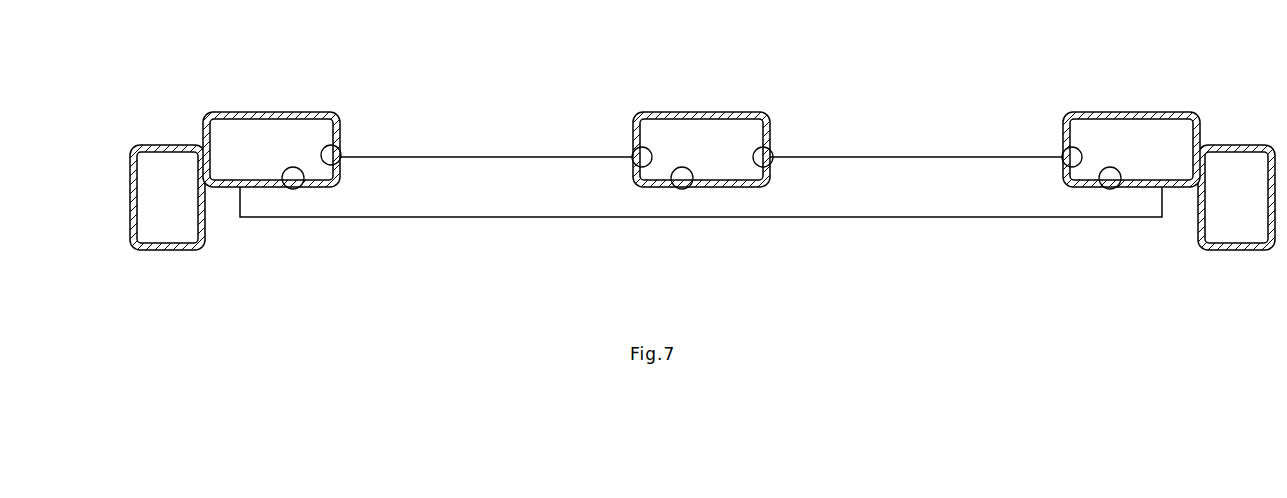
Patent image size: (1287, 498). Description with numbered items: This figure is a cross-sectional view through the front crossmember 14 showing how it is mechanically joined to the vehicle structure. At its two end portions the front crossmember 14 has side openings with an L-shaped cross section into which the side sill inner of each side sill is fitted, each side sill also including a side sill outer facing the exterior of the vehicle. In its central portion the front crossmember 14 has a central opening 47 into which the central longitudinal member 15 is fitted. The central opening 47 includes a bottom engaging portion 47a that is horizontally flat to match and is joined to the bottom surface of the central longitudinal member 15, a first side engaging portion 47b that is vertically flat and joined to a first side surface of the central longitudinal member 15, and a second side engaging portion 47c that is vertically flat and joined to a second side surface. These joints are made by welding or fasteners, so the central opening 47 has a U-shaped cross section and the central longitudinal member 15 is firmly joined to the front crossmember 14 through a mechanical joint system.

The front crossmember 14 is at (855, 208).
The central longitudinal member 15 is at (700, 112).
The central opening 47 is at (703, 160).
The bottom engaging portion 47a is at (690, 188).
The first side engaging portion 47b is at (637, 151).
The second side engaging portion 47c is at (767, 151).